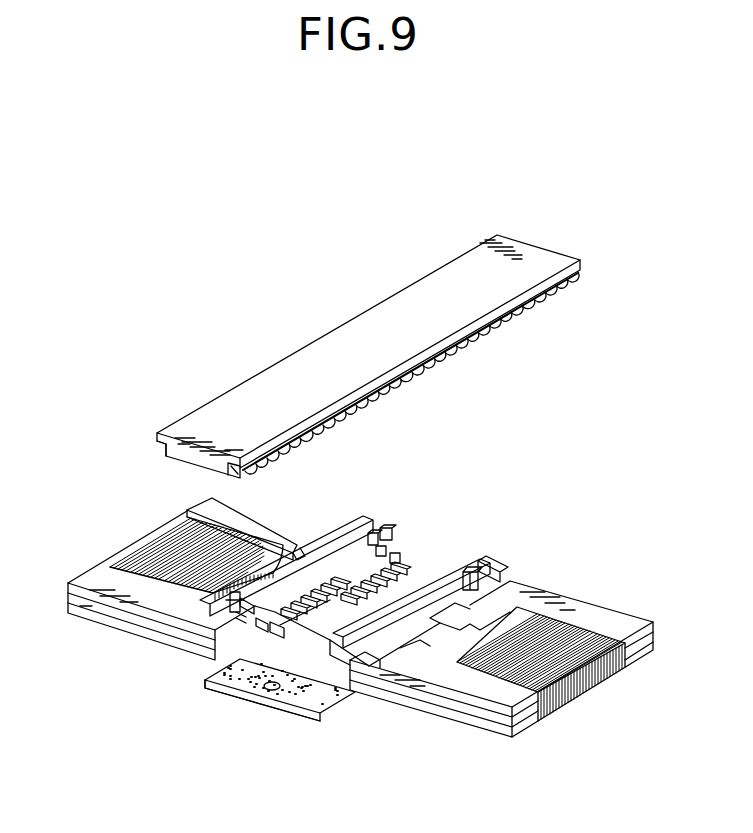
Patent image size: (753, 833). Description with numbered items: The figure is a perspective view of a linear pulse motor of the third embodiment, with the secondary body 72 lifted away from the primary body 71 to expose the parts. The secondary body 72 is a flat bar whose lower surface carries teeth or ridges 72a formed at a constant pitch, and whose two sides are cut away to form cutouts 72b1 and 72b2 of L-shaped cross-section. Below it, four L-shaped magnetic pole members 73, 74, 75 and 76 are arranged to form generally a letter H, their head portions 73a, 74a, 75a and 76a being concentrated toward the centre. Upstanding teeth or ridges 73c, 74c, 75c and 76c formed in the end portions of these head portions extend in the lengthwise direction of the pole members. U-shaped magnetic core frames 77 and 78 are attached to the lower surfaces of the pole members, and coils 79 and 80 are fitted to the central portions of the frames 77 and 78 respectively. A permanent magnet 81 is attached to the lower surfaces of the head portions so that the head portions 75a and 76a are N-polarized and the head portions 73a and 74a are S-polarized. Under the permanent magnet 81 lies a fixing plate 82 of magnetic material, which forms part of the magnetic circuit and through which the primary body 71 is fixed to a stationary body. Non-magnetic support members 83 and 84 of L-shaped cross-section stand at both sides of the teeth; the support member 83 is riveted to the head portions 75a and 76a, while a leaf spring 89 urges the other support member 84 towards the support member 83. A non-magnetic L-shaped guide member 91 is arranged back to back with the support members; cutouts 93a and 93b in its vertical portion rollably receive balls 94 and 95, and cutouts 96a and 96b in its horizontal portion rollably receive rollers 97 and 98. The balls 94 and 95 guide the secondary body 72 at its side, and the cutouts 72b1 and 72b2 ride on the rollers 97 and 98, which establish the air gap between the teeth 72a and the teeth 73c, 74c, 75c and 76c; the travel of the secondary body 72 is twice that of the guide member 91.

The primary body 71 is at (148, 342).
The secondary body 72 is at (336, 369).
The teeth or ridges 72a is at (440, 352).
The cutout 72b1 is at (168, 447).
The cutout 72b2 is at (237, 467).
The magnetic pole member 73 is at (501, 642).
The head portion 73a is at (503, 600).
The teeth or ridges 73c is at (463, 570).
The magnetic pole member 74 is at (382, 672).
The head portion 74a is at (412, 650).
The teeth or ridges 74c is at (363, 657).
The magnetic pole member 75 is at (304, 559).
The head portion 75a is at (310, 543).
The teeth or ridges 75c is at (437, 567).
The magnetic pole member 76 is at (137, 583).
The head portion 76a is at (142, 577).
The teeth or ridges 76c is at (280, 630).
The magnetic core frame 77 is at (518, 727).
The magnetic core frame 78 is at (112, 617).
The coil 79 is at (557, 707).
The coil 80 is at (87, 613).
The permanent magnet 81 is at (252, 732).
The fixing plate 82 is at (208, 683).
The support member 83 is at (297, 563).
The support member 84 is at (485, 567).
The leaf spring 89 is at (482, 580).
The guide member 91 is at (327, 677).
The cutout 93a is at (375, 532).
The cutout 93b is at (212, 604).
The ball 94 is at (378, 533).
The ball 95 is at (225, 611).
The cutout 96a is at (382, 543).
The cutout 96b is at (243, 620).
The roller 97 is at (395, 553).
The roller 98 is at (240, 652).